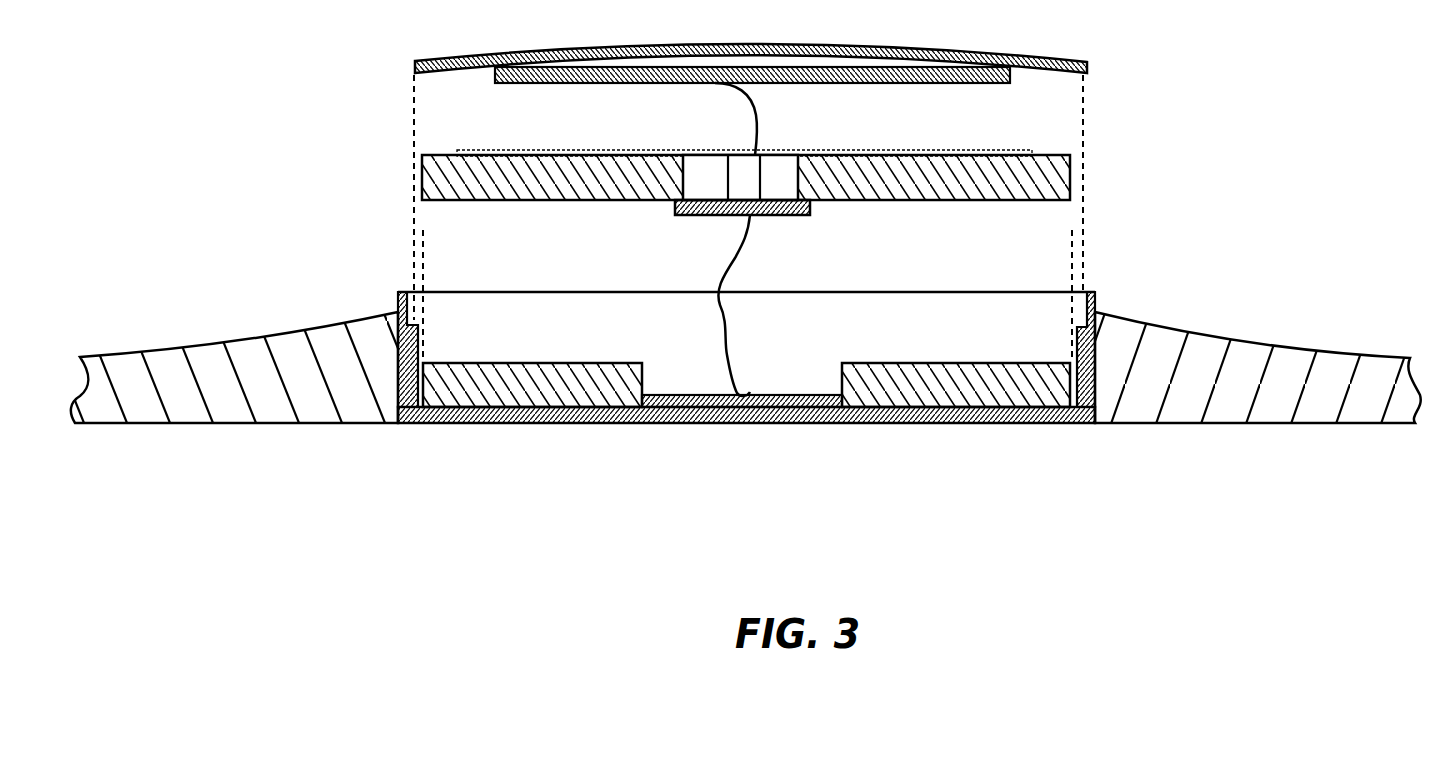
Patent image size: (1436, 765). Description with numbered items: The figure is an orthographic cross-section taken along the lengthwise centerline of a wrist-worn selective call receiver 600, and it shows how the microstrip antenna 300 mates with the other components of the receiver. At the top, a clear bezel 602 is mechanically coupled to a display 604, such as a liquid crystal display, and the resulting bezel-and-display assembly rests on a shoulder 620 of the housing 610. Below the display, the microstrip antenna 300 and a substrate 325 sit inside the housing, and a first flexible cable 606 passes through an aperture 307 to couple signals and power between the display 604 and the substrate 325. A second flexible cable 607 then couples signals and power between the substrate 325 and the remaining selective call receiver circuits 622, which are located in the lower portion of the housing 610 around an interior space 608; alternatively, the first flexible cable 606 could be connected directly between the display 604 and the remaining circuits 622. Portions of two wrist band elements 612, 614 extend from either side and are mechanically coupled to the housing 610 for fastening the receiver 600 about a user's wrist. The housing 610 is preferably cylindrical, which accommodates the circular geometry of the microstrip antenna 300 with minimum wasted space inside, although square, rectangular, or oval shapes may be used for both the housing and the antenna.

The wrist-worn selective call receiver 600 is at (801, 592).
The clear bezel 602 is at (898, 49).
The display 604 is at (980, 83).
The first flexible cable 606 is at (745, 128).
The microstrip antenna 300 is at (1068, 177).
The aperture 307 is at (760, 214).
The substrate 325 is at (705, 217).
The second flexible cable 607 is at (713, 272).
The cavity 608 is at (767, 357).
The housing 610 is at (980, 425).
The shoulder 620 is at (1072, 327).
The remaining selective call receiver circuits 622 is at (595, 390).
The wrist band element 614 is at (317, 423).
The wrist band element 612 is at (1197, 425).